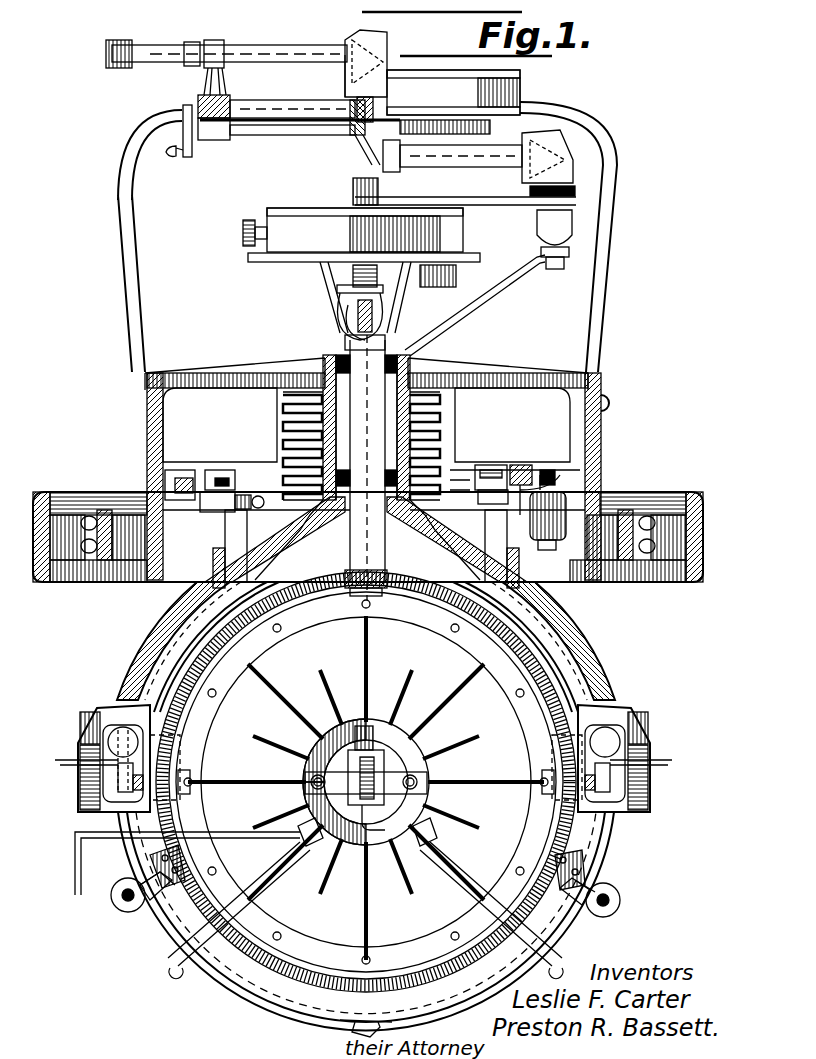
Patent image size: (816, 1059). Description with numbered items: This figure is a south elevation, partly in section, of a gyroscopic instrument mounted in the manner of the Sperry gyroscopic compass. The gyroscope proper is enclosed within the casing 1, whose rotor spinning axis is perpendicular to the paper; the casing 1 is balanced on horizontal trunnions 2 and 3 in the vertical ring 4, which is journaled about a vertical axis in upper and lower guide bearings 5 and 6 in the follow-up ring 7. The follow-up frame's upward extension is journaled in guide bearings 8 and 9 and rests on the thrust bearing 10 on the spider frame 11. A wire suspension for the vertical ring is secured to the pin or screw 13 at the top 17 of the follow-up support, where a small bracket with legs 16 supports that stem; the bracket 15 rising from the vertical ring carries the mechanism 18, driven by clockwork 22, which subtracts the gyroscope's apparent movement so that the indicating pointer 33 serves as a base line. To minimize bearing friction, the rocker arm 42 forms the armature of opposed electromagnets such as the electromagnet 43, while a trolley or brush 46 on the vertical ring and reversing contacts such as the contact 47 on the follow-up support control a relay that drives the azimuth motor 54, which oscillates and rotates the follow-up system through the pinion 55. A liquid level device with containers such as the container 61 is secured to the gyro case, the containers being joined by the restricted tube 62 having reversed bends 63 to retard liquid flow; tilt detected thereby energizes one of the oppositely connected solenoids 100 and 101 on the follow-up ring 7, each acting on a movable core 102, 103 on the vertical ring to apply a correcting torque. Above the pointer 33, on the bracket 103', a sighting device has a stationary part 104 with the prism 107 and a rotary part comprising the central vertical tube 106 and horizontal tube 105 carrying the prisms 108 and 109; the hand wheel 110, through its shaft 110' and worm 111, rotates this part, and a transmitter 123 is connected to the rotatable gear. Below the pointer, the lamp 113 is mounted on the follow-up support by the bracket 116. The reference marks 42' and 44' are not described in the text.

The casing 1 is at (366, 788).
The horizontal trunnion 2 is at (190, 780).
The horizontal trunnion 3 is at (540, 780).
The vertical ring 4 is at (368, 761).
The upper guide bearing 5 is at (361, 1038).
The lower guide bearing 6 is at (385, 522).
The follow-up ring 7 is at (370, 674).
The guide bearing 8 is at (374, 470).
The guide bearing 9 is at (392, 478).
The thrust bearing 10 is at (420, 360).
The spider frame 11 is at (330, 355).
The pin or screw 13 is at (362, 262).
The bracket 15 is at (390, 305).
The legs 16 is at (340, 310).
The top 17 is at (352, 333).
The mechanism 18 is at (364, 235).
The clockwork 22 is at (405, 270).
The indicating pointer 33 is at (508, 205).
The rocker arm 42 is at (647, 769).
The trunnion pin 42' is at (68, 769).
The electro-magnet 43 is at (618, 738).
The bearing 44' is at (96, 758).
The trolley or brush 46 is at (500, 462).
The reversing contact 47 is at (522, 462).
The azimuth motor 54 is at (548, 521).
The pinion 55 is at (560, 478).
The container 61 is at (384, 756).
The restricted tube 62 is at (244, 838).
The reversed bends 63 is at (169, 863).
The solenoid 100 is at (124, 912).
The solenoid 101 is at (615, 905).
The movable core 102 is at (138, 915).
The movable core 103 is at (621, 876).
The bracket 103' is at (344, 256).
The stationary part 104 is at (270, 32).
The horizontal tube 105 is at (460, 165).
The central vertical tube 106 is at (355, 96).
The prism 107 is at (365, 48).
The prism 108 is at (352, 188).
The prism 109 is at (573, 165).
The hand wheel 110 is at (171, 145).
The shaft 110' is at (276, 119).
The worm 111 is at (348, 132).
The lamp 113 is at (554, 239).
The bracket 116 is at (507, 275).
The transmitter 123 is at (285, 326).